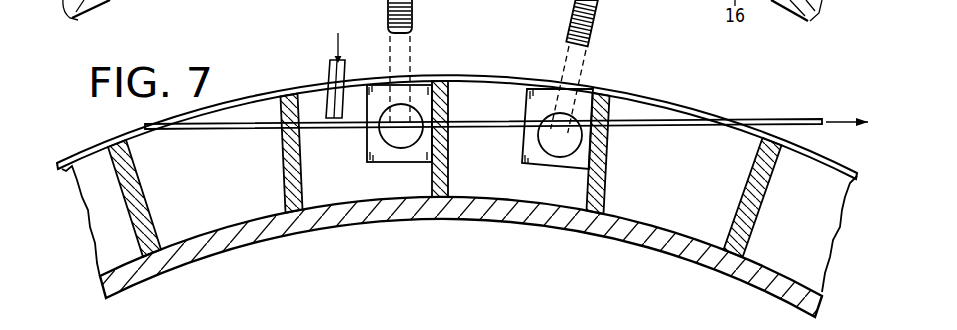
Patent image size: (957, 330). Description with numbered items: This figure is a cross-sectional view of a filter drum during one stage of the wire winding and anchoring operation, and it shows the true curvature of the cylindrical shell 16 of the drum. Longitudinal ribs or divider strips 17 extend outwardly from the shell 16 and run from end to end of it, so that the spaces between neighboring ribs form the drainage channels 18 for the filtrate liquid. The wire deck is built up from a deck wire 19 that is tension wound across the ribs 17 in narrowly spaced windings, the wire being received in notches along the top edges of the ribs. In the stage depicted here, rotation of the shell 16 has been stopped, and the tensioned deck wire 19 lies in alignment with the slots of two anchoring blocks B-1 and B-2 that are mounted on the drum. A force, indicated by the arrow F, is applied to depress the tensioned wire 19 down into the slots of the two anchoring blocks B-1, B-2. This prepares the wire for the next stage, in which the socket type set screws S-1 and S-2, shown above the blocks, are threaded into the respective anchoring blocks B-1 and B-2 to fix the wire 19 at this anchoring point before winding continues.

The cylindrical body or shell 16 is at (611, 228).
The longitudinal ribs or divider strips 17 is at (137, 220).
The drainage channels 18 is at (211, 199).
The deck wire 19 is at (762, 119).
The anchoring block B-1 is at (384, 162).
The anchoring block B-2 is at (543, 161).
The socket type set screw S-1 is at (389, 21).
The socket type set screw S-2 is at (577, 26).
The force F is at (334, 40).